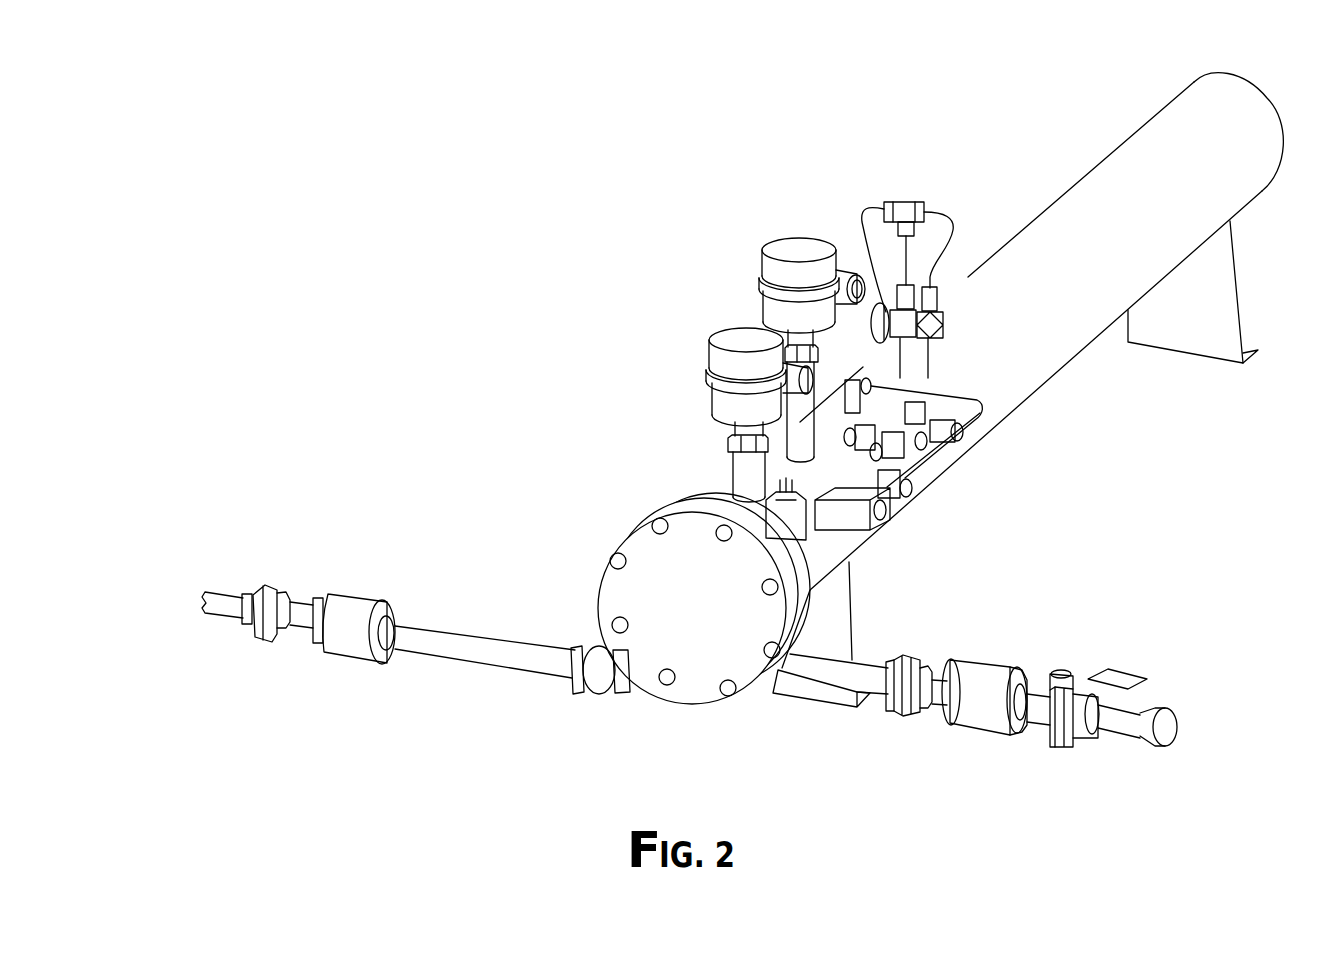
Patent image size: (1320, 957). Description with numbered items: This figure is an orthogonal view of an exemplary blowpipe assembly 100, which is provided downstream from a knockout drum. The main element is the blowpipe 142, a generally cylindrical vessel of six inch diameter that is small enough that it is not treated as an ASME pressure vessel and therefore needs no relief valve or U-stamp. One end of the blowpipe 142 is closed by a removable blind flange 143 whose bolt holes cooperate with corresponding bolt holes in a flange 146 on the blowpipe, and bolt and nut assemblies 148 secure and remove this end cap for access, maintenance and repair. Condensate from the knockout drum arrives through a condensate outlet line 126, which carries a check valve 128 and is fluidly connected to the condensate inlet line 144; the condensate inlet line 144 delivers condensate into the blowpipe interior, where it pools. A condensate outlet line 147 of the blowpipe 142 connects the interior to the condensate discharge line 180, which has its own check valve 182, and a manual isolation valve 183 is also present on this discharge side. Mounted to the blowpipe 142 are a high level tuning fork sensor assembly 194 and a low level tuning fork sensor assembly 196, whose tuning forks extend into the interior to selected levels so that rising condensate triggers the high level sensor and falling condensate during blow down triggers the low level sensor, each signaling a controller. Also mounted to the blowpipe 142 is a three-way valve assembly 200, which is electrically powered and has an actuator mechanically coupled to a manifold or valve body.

The blowpipe assembly 100 is at (492, 252).
The condensate outlet line 126 is at (216, 556).
The check valve 128 is at (355, 586).
The blowpipe 142 is at (1041, 320).
The blind flange 143 is at (634, 576).
The condensate inlet line 144 is at (477, 697).
The flange 146 is at (688, 539).
The condensate outlet line 147 is at (817, 720).
The bolt and nut assemblies 148 is at (558, 628).
The condensate discharge line 180 is at (1189, 694).
The check valve 182 is at (968, 731).
The manual isolation valve 183 is at (1116, 668).
The high level tuning fork sensor assembly 194 is at (775, 314).
The low level tuning fork sensor assembly 196 is at (699, 401).
The three-way valve assembly 200 is at (898, 301).